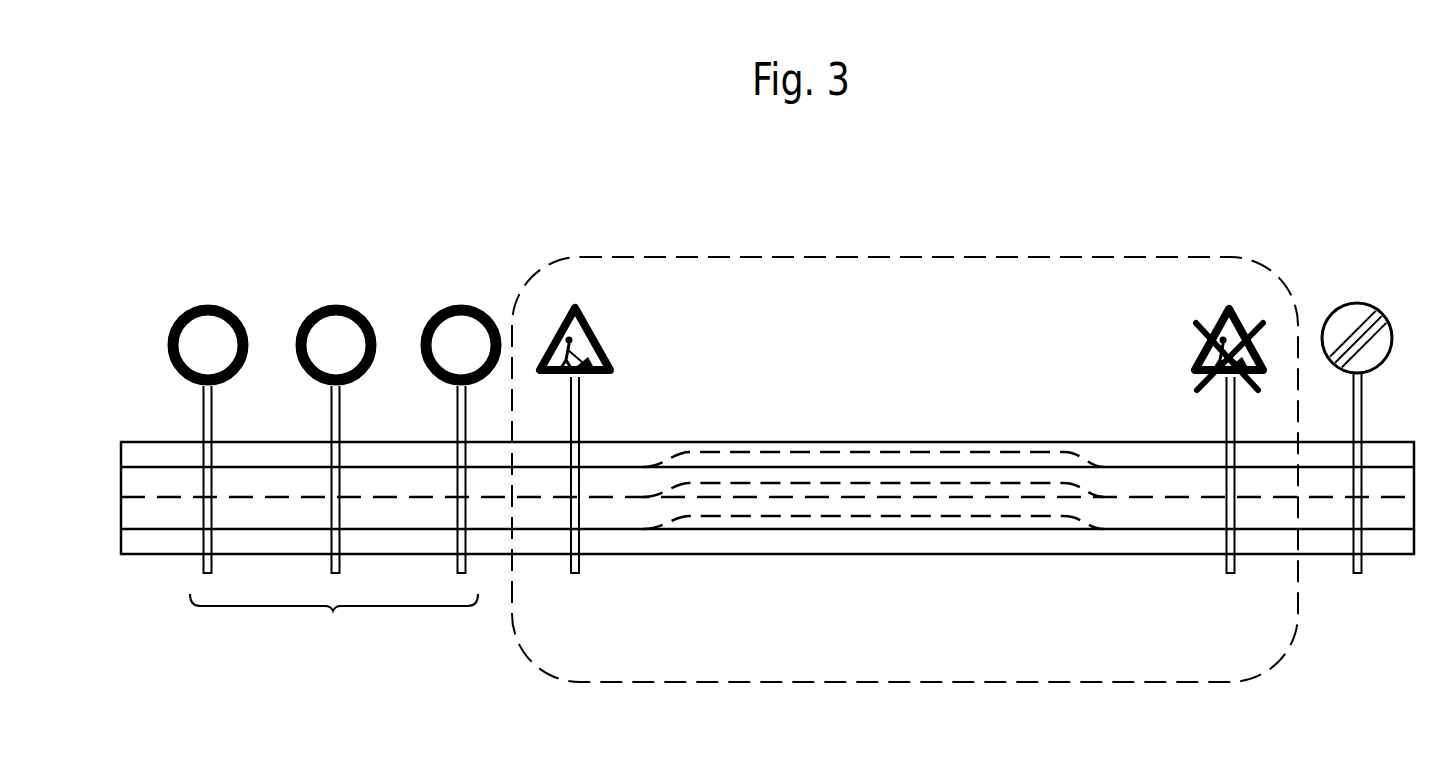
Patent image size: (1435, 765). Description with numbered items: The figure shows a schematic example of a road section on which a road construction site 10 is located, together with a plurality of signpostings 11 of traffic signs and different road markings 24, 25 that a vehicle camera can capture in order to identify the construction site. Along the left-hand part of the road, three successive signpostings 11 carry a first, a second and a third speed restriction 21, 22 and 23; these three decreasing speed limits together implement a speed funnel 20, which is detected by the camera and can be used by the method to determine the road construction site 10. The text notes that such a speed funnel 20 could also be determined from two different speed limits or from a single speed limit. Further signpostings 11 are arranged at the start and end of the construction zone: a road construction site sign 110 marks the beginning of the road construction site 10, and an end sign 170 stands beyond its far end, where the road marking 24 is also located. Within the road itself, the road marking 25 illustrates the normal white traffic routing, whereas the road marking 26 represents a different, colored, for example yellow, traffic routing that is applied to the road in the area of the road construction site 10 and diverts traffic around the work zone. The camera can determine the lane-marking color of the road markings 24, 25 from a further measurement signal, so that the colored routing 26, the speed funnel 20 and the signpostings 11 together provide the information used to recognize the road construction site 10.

The road construction site 10 is at (872, 255).
The signposting 11 is at (197, 290).
The speed funnel 20 is at (335, 449).
The first speed restriction 21 is at (215, 323).
The second speed restriction 22 is at (343, 323).
The third speed restriction 23 is at (465, 323).
The road marking 24 is at (1200, 352).
The road marking 25 is at (1148, 497).
The road marking 26 is at (764, 452).
The road construction site sign 110 is at (583, 347).
The end sign 170 is at (1355, 318).